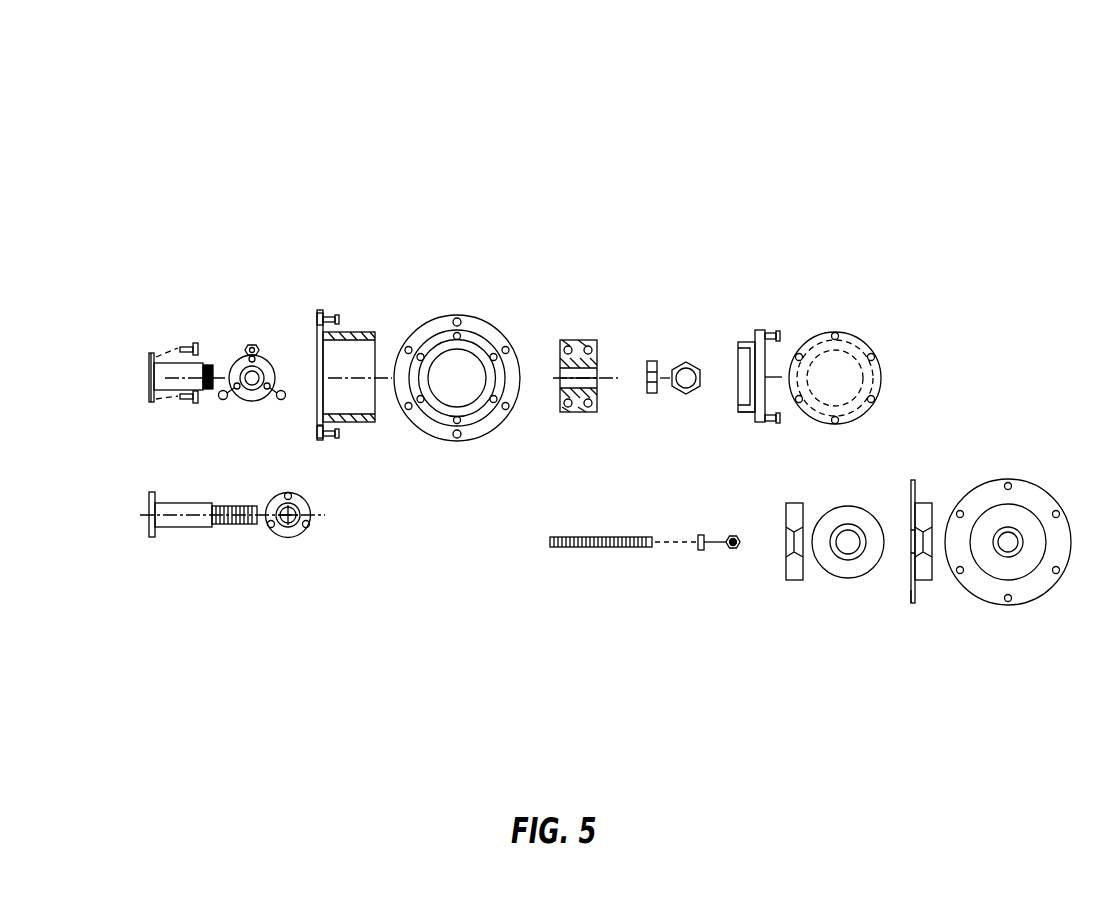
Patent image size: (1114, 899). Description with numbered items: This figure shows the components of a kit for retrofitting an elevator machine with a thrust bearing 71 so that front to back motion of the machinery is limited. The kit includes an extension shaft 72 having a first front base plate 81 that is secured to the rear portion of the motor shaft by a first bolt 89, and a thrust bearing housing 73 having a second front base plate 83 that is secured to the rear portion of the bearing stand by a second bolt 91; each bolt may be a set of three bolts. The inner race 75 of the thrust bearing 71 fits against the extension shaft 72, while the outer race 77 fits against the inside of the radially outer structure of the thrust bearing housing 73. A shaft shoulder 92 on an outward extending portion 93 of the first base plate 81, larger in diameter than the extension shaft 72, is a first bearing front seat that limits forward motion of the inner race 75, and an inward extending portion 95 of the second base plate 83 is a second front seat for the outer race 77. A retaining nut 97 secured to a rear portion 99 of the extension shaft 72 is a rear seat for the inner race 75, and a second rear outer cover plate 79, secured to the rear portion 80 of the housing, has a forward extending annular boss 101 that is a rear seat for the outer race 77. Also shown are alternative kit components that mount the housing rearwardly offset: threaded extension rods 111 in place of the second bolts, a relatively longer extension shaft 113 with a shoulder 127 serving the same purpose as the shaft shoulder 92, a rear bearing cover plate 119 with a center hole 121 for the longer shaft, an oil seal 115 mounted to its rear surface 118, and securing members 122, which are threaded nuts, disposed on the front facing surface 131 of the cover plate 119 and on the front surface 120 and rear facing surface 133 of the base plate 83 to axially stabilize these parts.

The thrust bearing 71 is at (597, 348).
The extension shaft 72 is at (210, 315).
The thrust bearing housing 73 is at (360, 332).
The inner race 75 is at (582, 345).
The outer race 77 is at (575, 413).
The second rear outer cover plate 79 is at (766, 377).
The rear portion of the thrust bearing housing 80 is at (365, 423).
The first front base plate 81 is at (152, 352).
The second front base plate 83 is at (321, 312).
The first bolt 89 is at (190, 345).
The second bolt 91 is at (340, 320).
The shaft shoulder 92 is at (150, 372).
The outward extending portion 93 is at (150, 392).
The inward extending portion 95 is at (317, 408).
The retaining nut 97 is at (675, 369).
The rear portion of the extension shaft 99 is at (213, 362).
The forward extending annular boss 101 is at (743, 412).
The threaded extension rods 111 is at (578, 550).
The extension shaft 113 is at (225, 552).
The oil seal 115 is at (793, 580).
The rear surface 118 is at (916, 494).
The rear bearing cover plate 119 is at (909, 592).
The front surface 120 is at (317, 425).
The center hole 121 is at (1008, 550).
The securing member 122 is at (708, 552).
The shoulder 127 is at (178, 530).
The front facing surface 131 is at (910, 495).
The rear facing surface 133 is at (322, 442).